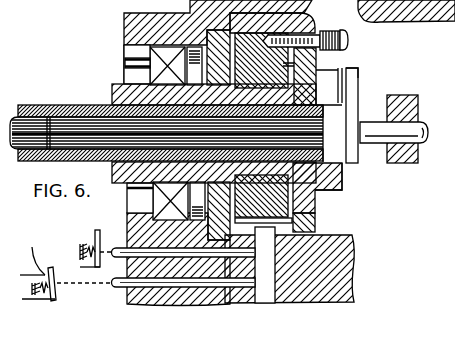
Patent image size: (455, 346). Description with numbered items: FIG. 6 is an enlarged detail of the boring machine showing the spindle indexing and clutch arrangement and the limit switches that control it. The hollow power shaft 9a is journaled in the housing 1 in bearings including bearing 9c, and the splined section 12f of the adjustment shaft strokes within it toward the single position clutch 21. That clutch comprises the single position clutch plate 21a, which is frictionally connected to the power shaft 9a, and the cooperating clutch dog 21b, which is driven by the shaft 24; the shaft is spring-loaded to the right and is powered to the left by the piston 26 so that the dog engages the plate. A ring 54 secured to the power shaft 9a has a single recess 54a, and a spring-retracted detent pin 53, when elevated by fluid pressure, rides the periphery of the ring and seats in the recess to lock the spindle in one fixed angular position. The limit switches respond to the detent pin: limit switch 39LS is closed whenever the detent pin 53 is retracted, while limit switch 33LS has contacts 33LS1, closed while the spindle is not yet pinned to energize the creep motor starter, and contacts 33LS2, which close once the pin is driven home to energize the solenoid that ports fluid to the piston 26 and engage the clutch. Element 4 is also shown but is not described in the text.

The housing 1 is at (124, 25).
The bearing 9c is at (153, 67).
The power shaft 9a is at (112, 88).
The splined section 12f is at (26, 125).
The ring 54 is at (284, 66).
The clutch dog 21b is at (352, 78).
The piston 26 is at (418, 114).
The single position clutch 21 is at (366, 181).
The shaft 24 is at (373, 147).
The single position clutch plate 21a is at (342, 190).
The recess 54a is at (292, 222).
The detent pin 53 is at (283, 279).
The frame 4 is at (449, 242).
The limit switch 39LS is at (85, 207).
The contacts 33LS2 is at (45, 275).
The contacts 33LS1 is at (64, 235).
The limit switch 33LS is at (46, 292).